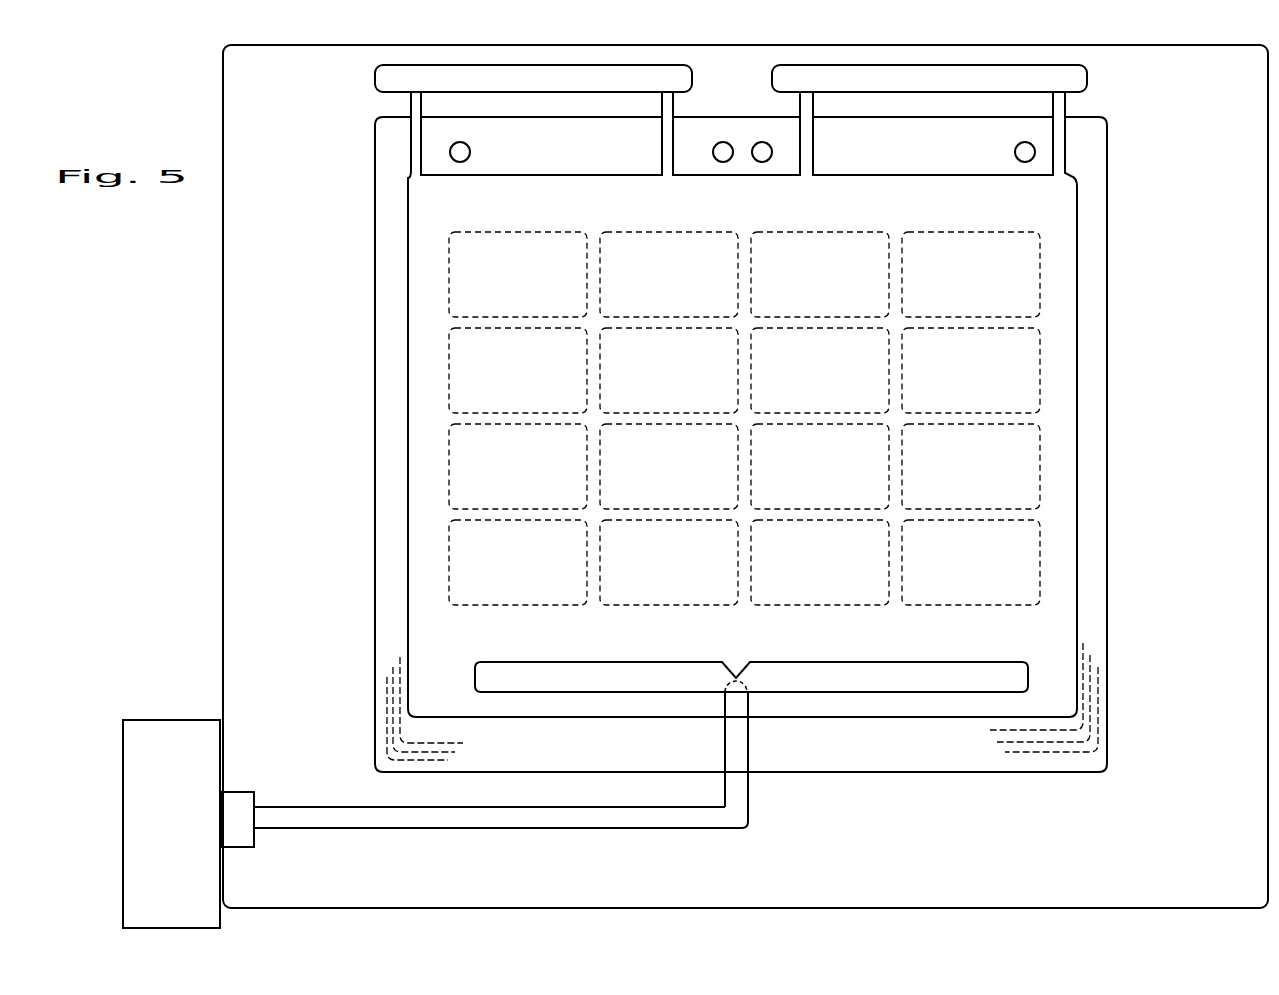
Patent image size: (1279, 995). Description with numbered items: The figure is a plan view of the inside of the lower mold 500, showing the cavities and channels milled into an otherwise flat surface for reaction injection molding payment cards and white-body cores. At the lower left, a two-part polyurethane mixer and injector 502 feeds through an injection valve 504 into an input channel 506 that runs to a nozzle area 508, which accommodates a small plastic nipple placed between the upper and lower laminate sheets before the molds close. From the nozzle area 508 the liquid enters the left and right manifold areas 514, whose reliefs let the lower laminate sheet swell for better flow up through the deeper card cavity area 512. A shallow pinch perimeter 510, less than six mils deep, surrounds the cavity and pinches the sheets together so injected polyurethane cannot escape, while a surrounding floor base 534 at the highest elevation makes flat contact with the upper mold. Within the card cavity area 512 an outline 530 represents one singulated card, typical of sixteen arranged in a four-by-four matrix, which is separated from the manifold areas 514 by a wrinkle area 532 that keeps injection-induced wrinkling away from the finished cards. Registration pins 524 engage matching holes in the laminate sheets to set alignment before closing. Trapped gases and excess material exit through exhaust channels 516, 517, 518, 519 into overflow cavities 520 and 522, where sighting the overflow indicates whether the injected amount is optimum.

The mold 500 is at (122, 341).
The two-part polyurethane mixer and injector 502 is at (186, 717).
The injection valve 504 is at (235, 791).
The channel 506 is at (383, 829).
The nozzle area 508 is at (726, 722).
The pinch perimeter 510 is at (578, 164).
The card cavity area 512 is at (439, 215).
The manifold channel 514 is at (616, 687).
The exhaust channel 516 is at (411, 108).
The exhaust channel 517 is at (664, 105).
The exhaust channel 518 is at (803, 103).
The exhaust channel 519 is at (1068, 103).
The overflow cavity 520 is at (593, 87).
The overflow cavity 522 is at (834, 87).
The registration pins 524 is at (467, 160).
The outline 530 is at (498, 301).
The wrinkle area 532 is at (728, 657).
The floor base 534 is at (269, 450).